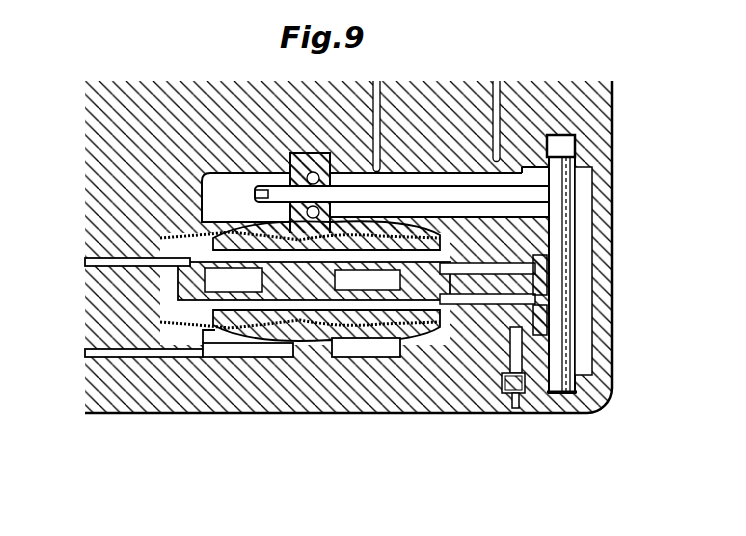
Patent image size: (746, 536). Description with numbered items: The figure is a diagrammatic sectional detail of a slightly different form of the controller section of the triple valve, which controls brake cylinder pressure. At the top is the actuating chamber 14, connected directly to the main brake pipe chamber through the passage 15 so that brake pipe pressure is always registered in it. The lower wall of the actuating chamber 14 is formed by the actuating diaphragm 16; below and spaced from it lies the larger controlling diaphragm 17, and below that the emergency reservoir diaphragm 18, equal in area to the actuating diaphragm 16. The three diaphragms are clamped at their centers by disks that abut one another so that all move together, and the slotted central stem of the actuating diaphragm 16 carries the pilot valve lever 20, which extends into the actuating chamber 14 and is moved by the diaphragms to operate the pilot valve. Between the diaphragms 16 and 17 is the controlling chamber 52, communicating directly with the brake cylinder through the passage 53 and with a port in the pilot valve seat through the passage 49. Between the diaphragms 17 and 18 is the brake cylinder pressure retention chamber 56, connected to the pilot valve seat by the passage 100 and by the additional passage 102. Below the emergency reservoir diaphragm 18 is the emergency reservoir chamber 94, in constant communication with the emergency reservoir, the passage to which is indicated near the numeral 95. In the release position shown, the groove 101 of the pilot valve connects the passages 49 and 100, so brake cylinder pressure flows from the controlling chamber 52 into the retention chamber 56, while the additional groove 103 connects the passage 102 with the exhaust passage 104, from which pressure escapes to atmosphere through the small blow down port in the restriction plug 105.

The actuating chamber 14 is at (243, 183).
The passage 15 is at (376, 83).
The actuating diaphragm 16 is at (208, 240).
The controlling diaphragm 17 is at (213, 335).
The emergency reservoir diaphragm 18 is at (300, 323).
The pilot valve lever 20 is at (536, 200).
The passage 49 is at (466, 263).
The controlling chamber 52 is at (200, 236).
The passage 53 is at (85, 261).
The brake cylinder pressure retention chamber 56 is at (213, 347).
The emergency reservoir chamber 94 is at (282, 352).
The passage 95 is at (87, 353).
The passage 100 is at (458, 300).
The groove 101 is at (533, 288).
The additional passage 102 is at (485, 315).
The additional groove 103 is at (537, 328).
The exhaust passage 104 is at (512, 398).
The restriction plug 105 is at (570, 400).